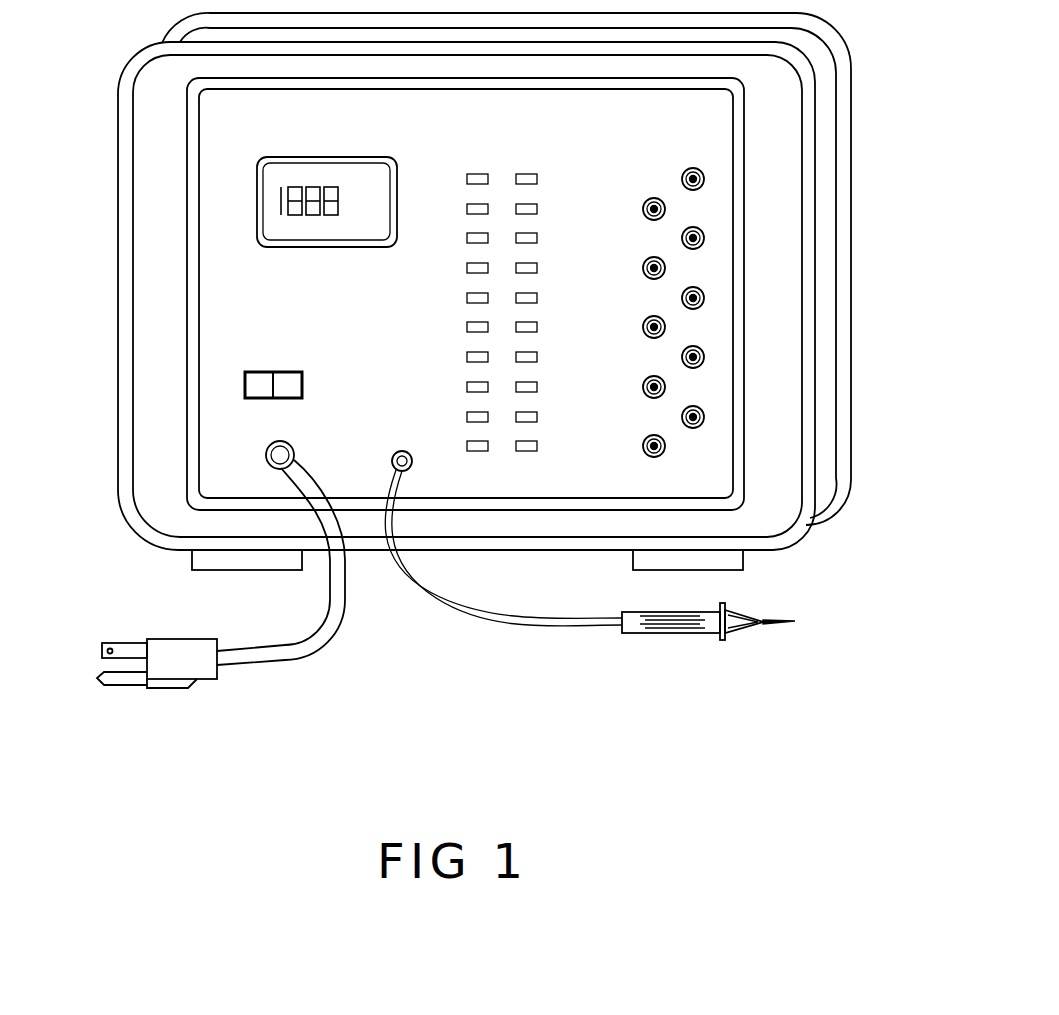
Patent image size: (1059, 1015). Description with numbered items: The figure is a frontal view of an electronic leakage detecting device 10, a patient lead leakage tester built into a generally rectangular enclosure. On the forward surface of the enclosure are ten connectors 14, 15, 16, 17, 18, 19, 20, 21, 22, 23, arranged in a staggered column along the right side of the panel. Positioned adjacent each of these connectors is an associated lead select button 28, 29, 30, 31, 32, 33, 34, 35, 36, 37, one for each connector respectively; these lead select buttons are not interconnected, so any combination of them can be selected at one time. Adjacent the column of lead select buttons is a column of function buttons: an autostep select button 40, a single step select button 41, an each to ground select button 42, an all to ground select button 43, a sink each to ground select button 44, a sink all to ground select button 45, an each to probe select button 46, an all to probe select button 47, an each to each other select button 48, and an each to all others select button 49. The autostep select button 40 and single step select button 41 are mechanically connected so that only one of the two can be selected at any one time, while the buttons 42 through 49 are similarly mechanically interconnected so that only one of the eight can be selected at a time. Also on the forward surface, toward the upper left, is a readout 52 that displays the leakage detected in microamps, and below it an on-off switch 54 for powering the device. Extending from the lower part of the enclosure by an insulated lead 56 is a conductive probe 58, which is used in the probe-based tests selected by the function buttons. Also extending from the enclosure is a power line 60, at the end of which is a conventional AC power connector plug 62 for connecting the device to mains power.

The electronic leakage detecting device 10 is at (820, 542).
The connector 14 is at (704, 176).
The connector 15 is at (665, 207).
The connector 16 is at (704, 235).
The connector 17 is at (665, 266).
The connector 18 is at (704, 295).
The connector 19 is at (665, 325).
The connector 20 is at (704, 355).
The connector 21 is at (665, 385).
The connector 22 is at (704, 415).
The connector 23 is at (665, 445).
The lead select button 28 is at (537, 179).
The lead select button 29 is at (537, 209).
The lead select button 30 is at (537, 238).
The lead select button 31 is at (537, 268).
The lead select button 32 is at (537, 298).
The lead select button 33 is at (537, 327).
The lead select button 34 is at (537, 357).
The lead select button 35 is at (537, 387).
The lead select button 36 is at (537, 417).
The lead select button 37 is at (537, 446).
The autostep select button 40 is at (467, 179).
The single step select button 41 is at (467, 209).
The each to ground select button 42 is at (467, 238).
The all to ground select button 43 is at (467, 268).
The sink each to ground select button 44 is at (467, 298).
The sink all to ground select button 45 is at (467, 327).
The each to probe select button 46 is at (467, 357).
The all to probe select button 47 is at (467, 387).
The each to each other select button 48 is at (467, 417).
The each to all others select button 49 is at (467, 446).
The readout 52 is at (252, 183).
The on-off switch 54 is at (243, 393).
The insulated lead 56 is at (545, 620).
The conductive probe 58 is at (775, 625).
The power line 60 is at (303, 655).
The AC power connector plug 62 is at (160, 688).